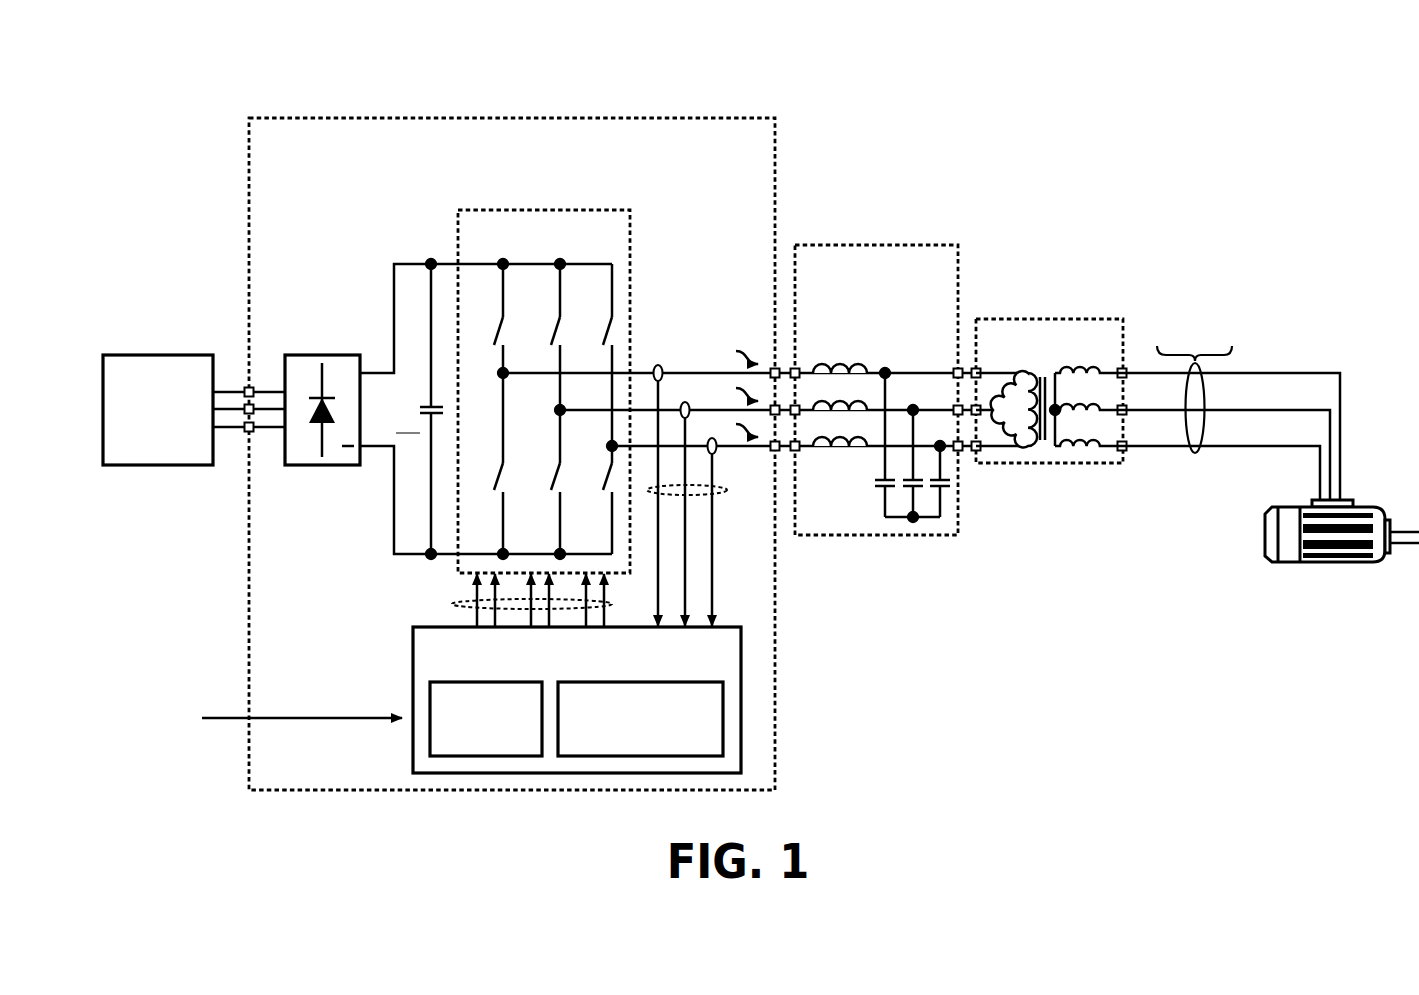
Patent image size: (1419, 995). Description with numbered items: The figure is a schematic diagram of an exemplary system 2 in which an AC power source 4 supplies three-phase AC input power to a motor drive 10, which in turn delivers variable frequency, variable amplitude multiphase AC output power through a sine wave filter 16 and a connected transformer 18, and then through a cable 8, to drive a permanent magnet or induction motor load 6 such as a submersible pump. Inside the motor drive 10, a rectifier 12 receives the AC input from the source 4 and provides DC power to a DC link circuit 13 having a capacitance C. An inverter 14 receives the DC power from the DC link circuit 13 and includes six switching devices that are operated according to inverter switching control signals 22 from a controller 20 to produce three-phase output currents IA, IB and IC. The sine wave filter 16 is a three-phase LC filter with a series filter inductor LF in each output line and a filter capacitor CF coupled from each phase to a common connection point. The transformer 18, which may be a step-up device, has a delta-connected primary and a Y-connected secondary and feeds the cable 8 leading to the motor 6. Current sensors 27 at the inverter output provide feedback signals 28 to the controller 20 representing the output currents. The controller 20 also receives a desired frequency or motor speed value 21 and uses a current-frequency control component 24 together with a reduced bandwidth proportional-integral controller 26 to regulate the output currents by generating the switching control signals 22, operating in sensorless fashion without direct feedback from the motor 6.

The system 2 is at (170, 56).
The AC power source 4 is at (158, 355).
The motor load 6 is at (1266, 535).
The cable 8 is at (1192, 452).
The motor drive power conversion system 10 is at (512, 118).
The rectifier 12 is at (320, 355).
The DC link circuit 13 is at (402, 218).
The inverter 14 is at (545, 210).
The sine wave filter 16 is at (879, 245).
The transformer 18 is at (1049, 319).
The controller 20 is at (413, 650).
The desired frequency or motor speed value 21 is at (222, 718).
The inverter switching control signals 22 is at (454, 604).
The current-frequency control component 24 is at (501, 682).
The reduced bandwidth proportional-integral controller 26 is at (686, 682).
The current sensors 27 is at (692, 350).
The feedback signals 28 is at (727, 490).